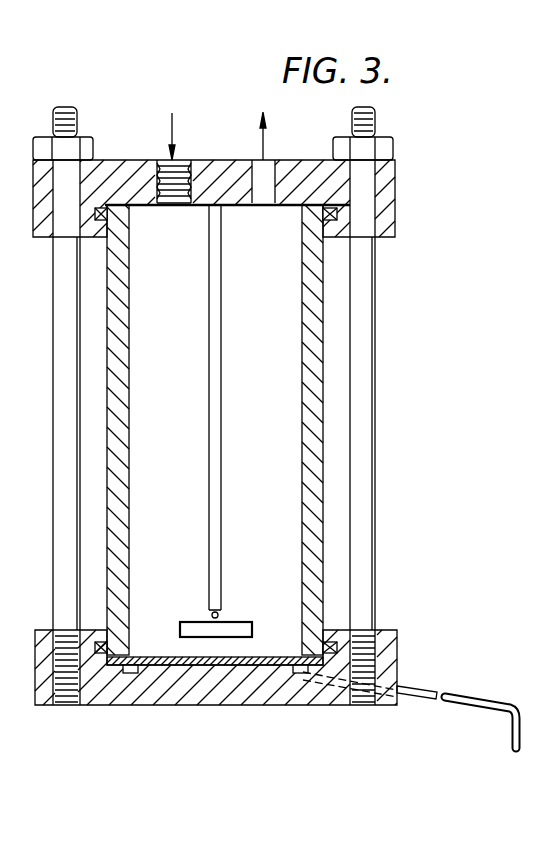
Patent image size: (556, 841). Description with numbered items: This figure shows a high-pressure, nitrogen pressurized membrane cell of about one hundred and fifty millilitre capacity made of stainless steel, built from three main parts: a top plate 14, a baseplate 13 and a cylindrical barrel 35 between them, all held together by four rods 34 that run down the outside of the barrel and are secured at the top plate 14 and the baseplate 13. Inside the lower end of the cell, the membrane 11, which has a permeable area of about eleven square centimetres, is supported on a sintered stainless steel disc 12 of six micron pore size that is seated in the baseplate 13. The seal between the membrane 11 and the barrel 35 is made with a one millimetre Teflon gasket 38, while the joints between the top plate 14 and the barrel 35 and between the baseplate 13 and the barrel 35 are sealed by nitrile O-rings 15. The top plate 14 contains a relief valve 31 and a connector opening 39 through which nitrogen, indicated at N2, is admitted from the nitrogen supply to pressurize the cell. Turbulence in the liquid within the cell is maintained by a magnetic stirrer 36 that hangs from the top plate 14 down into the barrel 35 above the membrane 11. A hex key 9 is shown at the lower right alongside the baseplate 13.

The hex key 9 is at (522, 730).
The membrane 11 is at (210, 667).
The sintered stainless steel disc 12 is at (247, 667).
The baseplate 13 is at (398, 636).
The top plate 14 is at (395, 187).
The nitrile O-rings 15 is at (348, 218).
The relief valve 31 is at (263, 144).
The rods 34 is at (375, 340).
The barrel 35 is at (316, 410).
The magnetic stirrer 36 is at (205, 628).
The Teflon gasket 38 is at (328, 658).
The connector opening 39 is at (167, 172).
The nitrogen inlet N2 is at (181, 122).